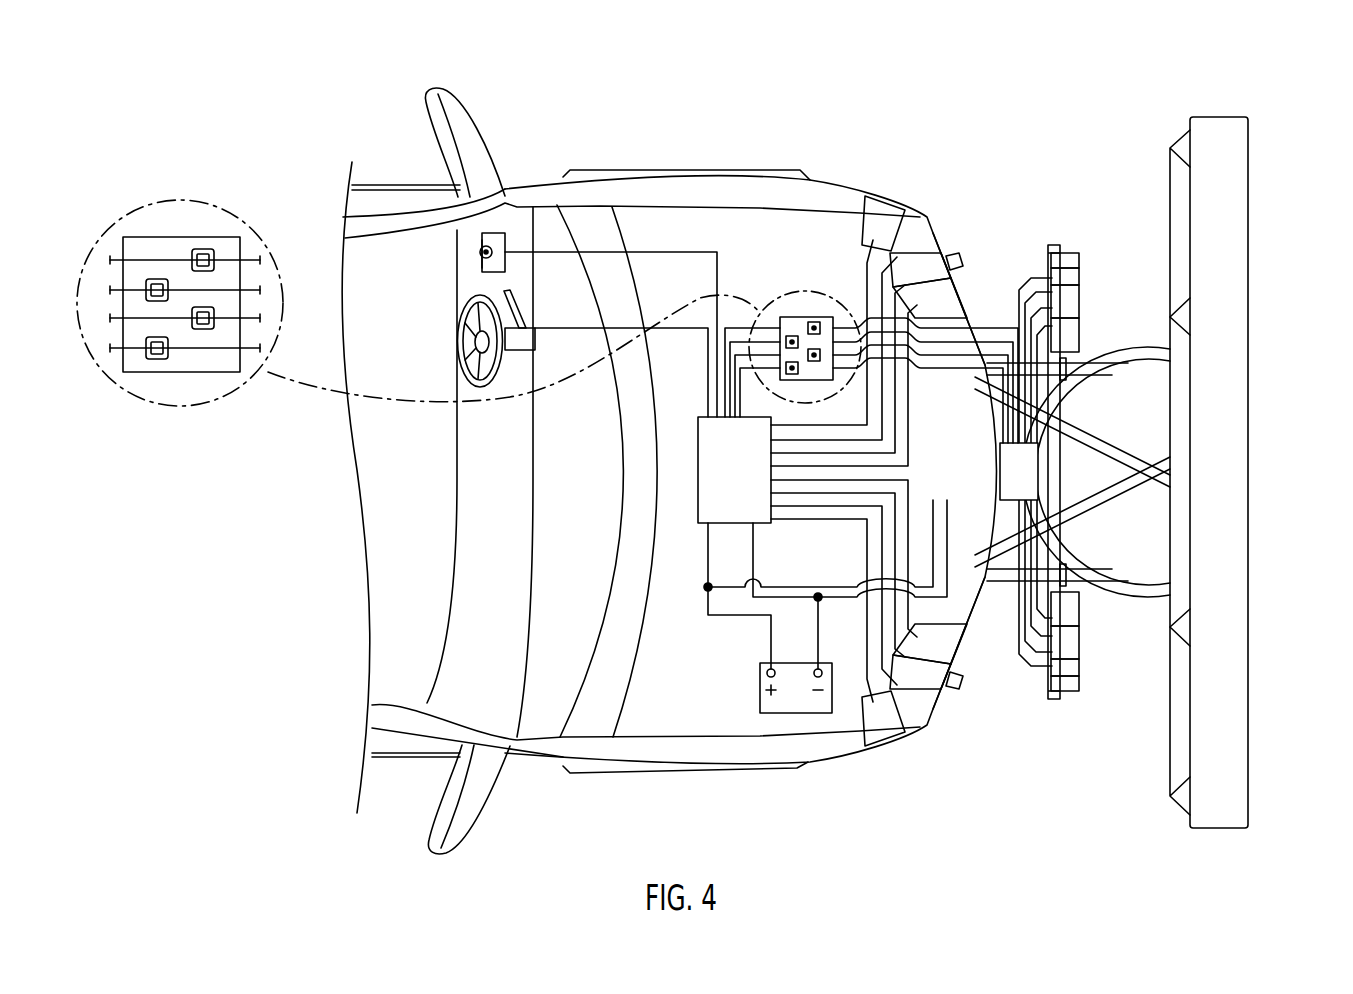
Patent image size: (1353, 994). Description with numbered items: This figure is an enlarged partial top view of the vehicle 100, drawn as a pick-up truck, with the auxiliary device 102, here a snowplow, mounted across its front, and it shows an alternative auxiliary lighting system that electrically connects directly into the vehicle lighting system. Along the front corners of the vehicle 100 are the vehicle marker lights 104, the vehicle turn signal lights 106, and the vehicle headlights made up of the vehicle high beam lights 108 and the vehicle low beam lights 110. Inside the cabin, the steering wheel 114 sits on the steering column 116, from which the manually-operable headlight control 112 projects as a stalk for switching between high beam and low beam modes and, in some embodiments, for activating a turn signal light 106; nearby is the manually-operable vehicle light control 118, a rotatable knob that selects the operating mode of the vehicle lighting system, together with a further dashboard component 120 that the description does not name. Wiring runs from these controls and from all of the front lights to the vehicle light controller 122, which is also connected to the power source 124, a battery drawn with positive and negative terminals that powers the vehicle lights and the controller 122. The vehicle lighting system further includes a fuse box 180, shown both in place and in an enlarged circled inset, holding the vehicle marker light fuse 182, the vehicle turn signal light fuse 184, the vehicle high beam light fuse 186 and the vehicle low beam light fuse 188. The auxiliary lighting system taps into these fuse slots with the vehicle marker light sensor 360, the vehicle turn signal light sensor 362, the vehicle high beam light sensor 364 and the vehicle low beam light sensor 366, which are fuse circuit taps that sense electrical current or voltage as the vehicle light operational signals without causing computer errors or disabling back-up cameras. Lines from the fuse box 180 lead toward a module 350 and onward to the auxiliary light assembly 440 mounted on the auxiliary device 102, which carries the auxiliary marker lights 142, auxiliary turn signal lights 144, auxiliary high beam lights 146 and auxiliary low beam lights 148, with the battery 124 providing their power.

The vehicle 100 is at (326, 75).
The auxiliary device 102 is at (1257, 101).
The vehicle marker lights 104 is at (862, 226).
The vehicle turn signal lights 106 is at (910, 245).
The vehicle high beam lights 108 is at (948, 255).
The vehicle low beam lights 110 is at (958, 282).
The manually-operable headlight control 112 is at (514, 312).
The steering wheel 114 is at (458, 320).
The steering column 116 is at (523, 342).
The manually-operable vehicle light control 118 is at (481, 262).
The camera 120 is at (490, 248).
The vehicle light controller 122 is at (698, 512).
The power source 124 is at (760, 702).
The auxiliary marker lights 142 is at (1079, 260).
The auxiliary turn signal lights 144 is at (1079, 277).
The auxiliary high beam lights 146 is at (1079, 301).
The auxiliary low beam lights 148 is at (1079, 336).
The fuse box 180 is at (469, 303).
The vehicle marker light fuse 182 is at (160, 359).
The vehicle turn signal light fuse 184 is at (206, 331).
The vehicle high beam light fuse 186 is at (152, 283).
The vehicle low beam light fuse 188 is at (199, 251).
The connector module 350 is at (1000, 470).
The vehicle marker light sensor 360 is at (152, 360).
The vehicle turn signal light sensor 362 is at (203, 330).
The vehicle high beam light sensor 364 is at (157, 280).
The vehicle low beam light sensor 366 is at (209, 250).
The sensor assembly 440 is at (1107, 456).